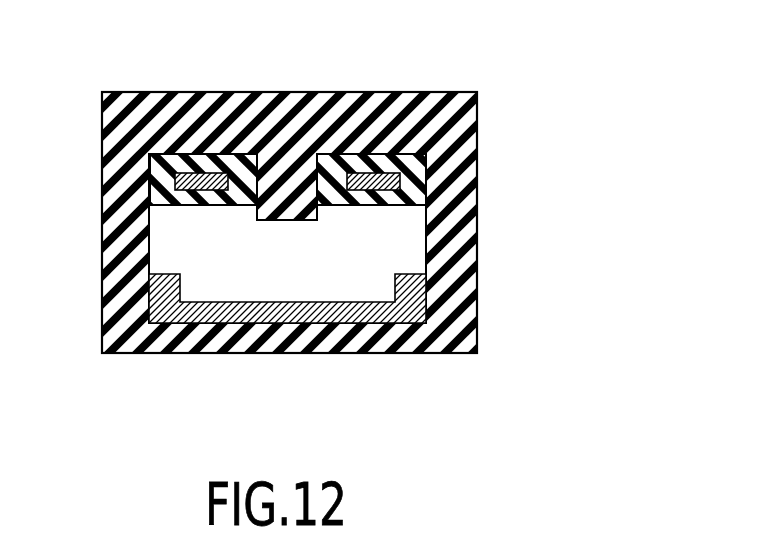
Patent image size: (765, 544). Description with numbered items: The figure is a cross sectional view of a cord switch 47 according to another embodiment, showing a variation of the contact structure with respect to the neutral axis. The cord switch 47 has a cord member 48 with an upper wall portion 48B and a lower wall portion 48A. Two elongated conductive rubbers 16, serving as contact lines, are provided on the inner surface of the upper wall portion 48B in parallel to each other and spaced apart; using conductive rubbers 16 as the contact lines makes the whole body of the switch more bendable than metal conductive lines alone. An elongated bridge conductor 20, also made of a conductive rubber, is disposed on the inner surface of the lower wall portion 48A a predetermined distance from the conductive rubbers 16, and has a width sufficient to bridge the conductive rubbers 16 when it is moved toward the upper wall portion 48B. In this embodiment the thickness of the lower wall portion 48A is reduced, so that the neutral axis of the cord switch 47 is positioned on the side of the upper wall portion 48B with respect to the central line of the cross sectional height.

The cord switch 47 is at (579, 54).
The cord member 48 is at (420, 100).
The lower wall portion 48A is at (305, 343).
The upper wall portion 48B is at (207, 100).
The conductive rubbers 16 is at (158, 177).
The bridge conductor 20 is at (190, 315).